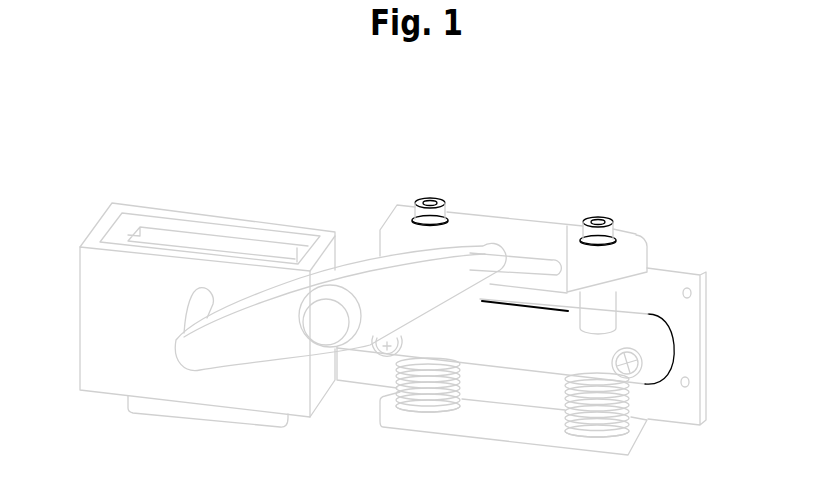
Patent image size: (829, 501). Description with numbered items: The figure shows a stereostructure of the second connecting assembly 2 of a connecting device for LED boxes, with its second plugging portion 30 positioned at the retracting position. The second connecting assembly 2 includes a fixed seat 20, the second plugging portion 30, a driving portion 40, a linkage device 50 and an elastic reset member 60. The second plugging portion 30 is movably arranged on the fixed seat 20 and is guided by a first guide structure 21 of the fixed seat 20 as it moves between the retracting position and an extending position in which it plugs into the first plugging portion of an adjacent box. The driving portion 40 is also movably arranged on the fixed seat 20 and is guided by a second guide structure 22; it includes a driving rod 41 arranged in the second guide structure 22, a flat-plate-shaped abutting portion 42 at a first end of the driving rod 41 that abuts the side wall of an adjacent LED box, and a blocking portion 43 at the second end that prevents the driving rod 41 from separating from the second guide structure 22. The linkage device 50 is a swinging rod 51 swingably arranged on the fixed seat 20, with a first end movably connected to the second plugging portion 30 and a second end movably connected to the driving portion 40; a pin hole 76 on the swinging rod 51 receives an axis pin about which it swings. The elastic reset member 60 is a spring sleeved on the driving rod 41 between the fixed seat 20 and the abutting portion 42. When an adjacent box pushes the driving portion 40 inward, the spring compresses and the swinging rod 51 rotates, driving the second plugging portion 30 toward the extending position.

The second connecting assembly 2 is at (427, 160).
The fixed seat 20 is at (57, 252).
The first guide structure 21 is at (105, 322).
The second guide structure 22 is at (505, 337).
The second plugging portion 30 is at (175, 410).
The driving portion 40 is at (758, 392).
The driving rod 41 is at (597, 322).
The abutting portion 42 is at (630, 438).
The blocking portion 43 is at (620, 273).
The linkage device 50 is at (355, 168).
The swinging rod 51 is at (378, 278).
The elastic reset member 60 is at (593, 413).
The pin hole 76 is at (322, 322).